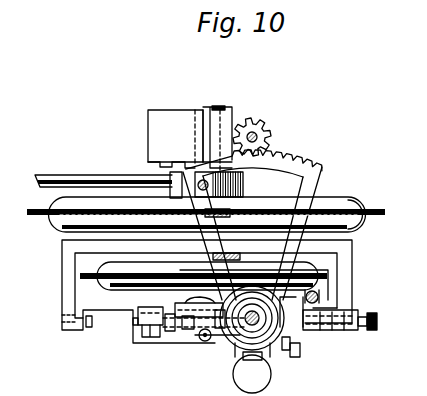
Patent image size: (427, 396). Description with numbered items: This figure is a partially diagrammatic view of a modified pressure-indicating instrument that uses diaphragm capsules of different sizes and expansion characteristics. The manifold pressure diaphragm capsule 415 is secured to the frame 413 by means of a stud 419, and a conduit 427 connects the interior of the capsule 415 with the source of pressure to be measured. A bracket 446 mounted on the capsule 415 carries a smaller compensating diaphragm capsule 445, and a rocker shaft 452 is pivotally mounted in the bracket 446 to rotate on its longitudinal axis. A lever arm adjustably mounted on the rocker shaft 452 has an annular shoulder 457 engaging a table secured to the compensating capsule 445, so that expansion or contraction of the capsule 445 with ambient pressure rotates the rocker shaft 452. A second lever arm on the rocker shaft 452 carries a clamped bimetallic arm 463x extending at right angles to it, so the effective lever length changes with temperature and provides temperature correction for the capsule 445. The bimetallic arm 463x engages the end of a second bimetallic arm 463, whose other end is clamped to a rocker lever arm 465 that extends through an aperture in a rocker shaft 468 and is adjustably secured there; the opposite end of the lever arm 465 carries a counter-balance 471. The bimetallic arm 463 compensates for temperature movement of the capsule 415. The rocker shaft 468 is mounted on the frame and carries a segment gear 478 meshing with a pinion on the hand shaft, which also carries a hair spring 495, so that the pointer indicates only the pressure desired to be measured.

The frame 413 is at (160, 110).
The stud 419 is at (213, 107).
The conduit 427 is at (106, 153).
The segment gear 478 is at (318, 177).
The manifold pressure diaphragm capsule 415 is at (52, 226).
The bracket 446 is at (68, 261).
The compensating diaphragm capsule 445 is at (97, 283).
The rocker shaft 452 is at (107, 325).
The second bimetallic arm 463 is at (192, 310).
The bimetallic arm 463x is at (172, 335).
The annular shoulder 457 is at (210, 347).
The rocker shaft 468 is at (233, 350).
The hair spring 495 is at (280, 352).
The counter-balance 471 is at (298, 341).
The rocker lever arm 465 is at (323, 337).